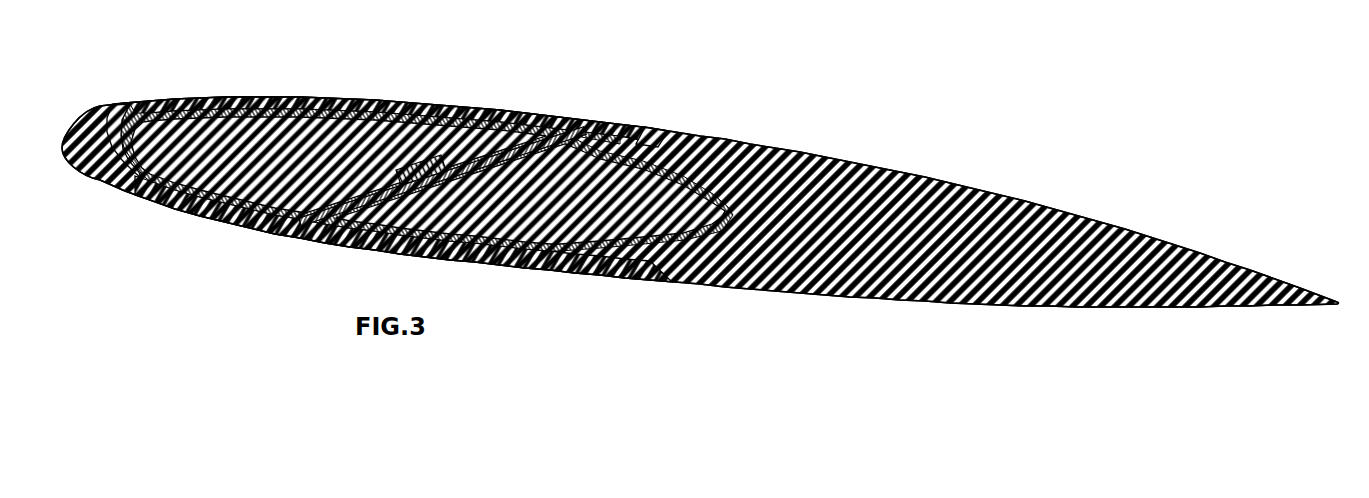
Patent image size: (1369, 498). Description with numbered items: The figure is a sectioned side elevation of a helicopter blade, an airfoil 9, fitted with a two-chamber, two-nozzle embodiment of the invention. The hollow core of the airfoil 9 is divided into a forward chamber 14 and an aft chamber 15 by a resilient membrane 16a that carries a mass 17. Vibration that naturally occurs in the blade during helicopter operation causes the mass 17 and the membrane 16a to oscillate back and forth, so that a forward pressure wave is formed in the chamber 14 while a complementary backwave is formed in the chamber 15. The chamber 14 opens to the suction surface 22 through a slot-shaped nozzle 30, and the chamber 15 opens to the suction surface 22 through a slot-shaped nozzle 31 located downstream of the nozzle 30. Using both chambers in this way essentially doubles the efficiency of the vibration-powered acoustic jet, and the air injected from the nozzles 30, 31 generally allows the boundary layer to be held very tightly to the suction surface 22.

The airfoil 9 is at (953, 183).
The chamber 14 is at (268, 171).
The chamber 15 is at (634, 218).
The membrane 16a is at (470, 177).
The mass 17 is at (418, 166).
The suction surface 22 is at (420, 100).
The slot-shaped nozzle 30 is at (121, 122).
The slot-shaped nozzle 31 is at (657, 140).